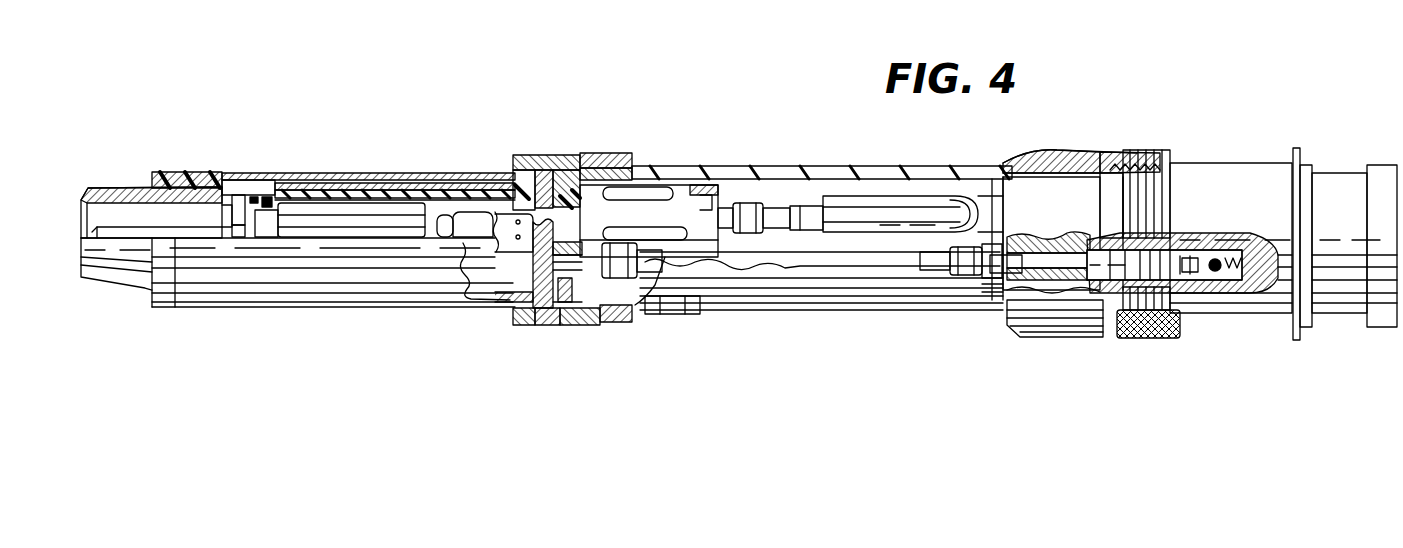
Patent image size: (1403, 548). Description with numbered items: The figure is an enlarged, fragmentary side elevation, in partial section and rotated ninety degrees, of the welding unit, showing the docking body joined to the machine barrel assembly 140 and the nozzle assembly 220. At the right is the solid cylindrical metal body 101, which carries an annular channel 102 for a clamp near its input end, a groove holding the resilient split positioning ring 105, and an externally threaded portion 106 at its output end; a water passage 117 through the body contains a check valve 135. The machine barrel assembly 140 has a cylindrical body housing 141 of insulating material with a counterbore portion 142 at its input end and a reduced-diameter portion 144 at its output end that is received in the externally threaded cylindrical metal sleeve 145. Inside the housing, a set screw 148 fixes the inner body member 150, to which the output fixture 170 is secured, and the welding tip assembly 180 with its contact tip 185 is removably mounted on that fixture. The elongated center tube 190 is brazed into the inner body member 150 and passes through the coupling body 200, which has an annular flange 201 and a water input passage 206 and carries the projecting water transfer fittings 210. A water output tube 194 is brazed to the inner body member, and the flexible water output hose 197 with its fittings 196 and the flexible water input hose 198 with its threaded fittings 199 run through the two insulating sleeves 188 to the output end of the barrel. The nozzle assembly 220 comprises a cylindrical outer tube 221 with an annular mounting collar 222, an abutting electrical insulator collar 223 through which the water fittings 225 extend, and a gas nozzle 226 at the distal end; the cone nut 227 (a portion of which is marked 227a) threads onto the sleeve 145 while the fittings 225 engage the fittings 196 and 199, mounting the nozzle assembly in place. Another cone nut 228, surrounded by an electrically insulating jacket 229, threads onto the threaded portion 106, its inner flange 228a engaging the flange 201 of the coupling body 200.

The cylindrical metal body 101 is at (1255, 132).
The annular channel 102 is at (1342, 172).
The resilient split positioning ring 105 is at (1296, 150).
The externally threaded portion 106 is at (1148, 178).
The water passage 117 is at (1250, 285).
The check valve 135 is at (1195, 248).
The machine barrel assembly 140 is at (673, 104).
The cylindrical body housing 141 is at (830, 133).
The counterbore portion 142 is at (885, 185).
The reduced-diameter portion 144 is at (650, 185).
The cylindrical metal sleeve 145 is at (648, 314).
The set screw 148 is at (705, 197).
The inner body member 150 is at (633, 202).
The output fixture 170 is at (475, 212).
The welding tip assembly 180 is at (342, 212).
The contact tip 185 is at (150, 222).
The insulating sleeves 188 is at (690, 270).
The center tube 190 is at (983, 217).
The water output tube 194 is at (990, 285).
The fittings 196 is at (752, 205).
The flexible water output hose 197 is at (950, 148).
The flexible water input hose 198 is at (862, 262).
The threaded fittings 199 is at (645, 243).
The coupling body 200 is at (1063, 233).
The annular flange 201 is at (1113, 183).
The water input passage 206 is at (1040, 260).
The water transfer fittings 210 is at (1108, 290).
The nozzle assembly 220 is at (340, 314).
The cylindrical outer tube 221 is at (232, 140).
The annular mounting collar 222 is at (537, 166).
The electrical insulator collar 223 is at (553, 170).
The water fittings 225 is at (560, 322).
The gas nozzle 226 is at (122, 298).
The cone nut 227 is at (603, 320).
The coupling flange 227a is at (527, 322).
The cone nut 228 is at (1105, 160).
The inner flange 228a is at (1095, 172).
The electrically insulating jacket 229 is at (1006, 168).